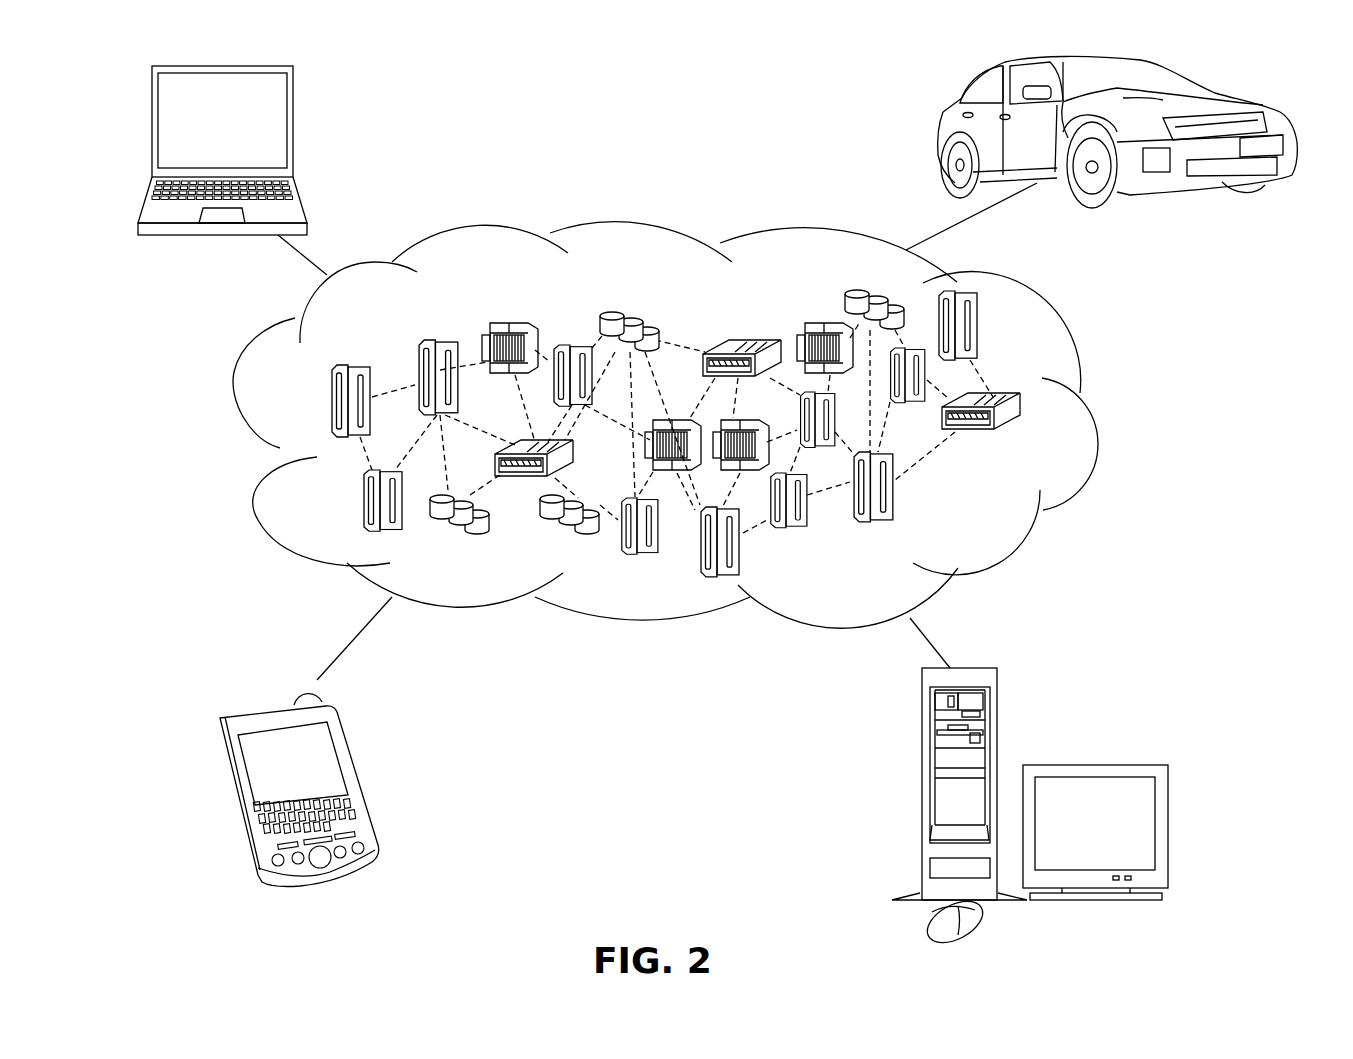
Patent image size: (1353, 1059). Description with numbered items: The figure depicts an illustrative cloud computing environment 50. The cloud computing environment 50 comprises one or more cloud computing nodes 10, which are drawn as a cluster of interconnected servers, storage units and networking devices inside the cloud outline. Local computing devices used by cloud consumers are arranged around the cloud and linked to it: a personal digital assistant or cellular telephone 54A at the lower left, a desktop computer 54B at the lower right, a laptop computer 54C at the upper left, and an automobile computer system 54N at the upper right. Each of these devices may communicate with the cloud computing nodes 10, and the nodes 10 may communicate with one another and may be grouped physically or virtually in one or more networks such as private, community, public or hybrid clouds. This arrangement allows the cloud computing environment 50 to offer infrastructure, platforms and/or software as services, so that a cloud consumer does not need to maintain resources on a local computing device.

The cloud computing node 10 is at (998, 516).
The cloud computing environment 50 is at (1090, 413).
The personal digital assistant (PDA) or cellular telephone 54A is at (352, 745).
The desktop computer 54B is at (922, 728).
The laptop computer 54C is at (293, 103).
The automobile computer system 54N is at (943, 122).